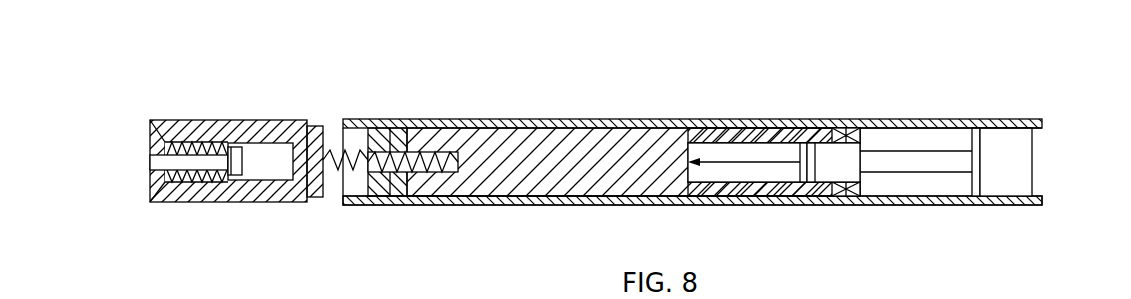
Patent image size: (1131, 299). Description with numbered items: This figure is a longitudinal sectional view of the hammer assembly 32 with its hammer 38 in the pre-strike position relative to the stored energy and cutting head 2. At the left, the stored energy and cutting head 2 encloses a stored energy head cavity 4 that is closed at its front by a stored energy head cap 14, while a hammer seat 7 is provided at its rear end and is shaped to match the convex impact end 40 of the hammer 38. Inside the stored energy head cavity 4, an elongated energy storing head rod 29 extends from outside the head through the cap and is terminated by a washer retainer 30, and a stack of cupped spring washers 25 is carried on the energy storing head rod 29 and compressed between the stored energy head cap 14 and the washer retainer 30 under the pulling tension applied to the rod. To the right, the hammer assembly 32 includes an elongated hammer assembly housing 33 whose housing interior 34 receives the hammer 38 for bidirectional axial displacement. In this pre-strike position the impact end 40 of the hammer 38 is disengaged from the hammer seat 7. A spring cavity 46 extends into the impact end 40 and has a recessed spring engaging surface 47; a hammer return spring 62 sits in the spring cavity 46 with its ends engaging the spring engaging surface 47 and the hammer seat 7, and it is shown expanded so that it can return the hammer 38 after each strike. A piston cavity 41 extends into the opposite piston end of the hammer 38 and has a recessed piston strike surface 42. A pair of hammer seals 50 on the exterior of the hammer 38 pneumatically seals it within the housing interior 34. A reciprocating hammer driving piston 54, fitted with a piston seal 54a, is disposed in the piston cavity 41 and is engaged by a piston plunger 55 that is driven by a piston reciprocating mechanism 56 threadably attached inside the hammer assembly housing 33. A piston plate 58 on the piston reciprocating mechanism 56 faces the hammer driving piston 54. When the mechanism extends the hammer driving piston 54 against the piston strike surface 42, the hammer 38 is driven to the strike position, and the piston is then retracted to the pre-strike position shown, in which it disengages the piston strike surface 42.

The stored energy and cutting head 2 is at (193, 116).
The stored energy head cavity 4 is at (262, 174).
The hammer seat 7 is at (326, 132).
The stored energy head cap 14 is at (151, 126).
The cupped spring washers 25 is at (208, 188).
The energy storing head rod 29 is at (160, 163).
The washer retainer 30 is at (234, 146).
The hammer assembly 32 is at (408, 58).
The hammer assembly housing 33 is at (552, 110).
The housing interior 34 is at (908, 136).
The hammer 38 is at (527, 214).
The impact end 40 is at (350, 200).
The piston cavity 41 is at (722, 148).
The piston strike surface 42 is at (696, 166).
The spring cavity 46 is at (418, 151).
The spring engaging surface 47 is at (447, 152).
The hammer seals 50 is at (392, 202).
The hammer driving piston 54 is at (823, 150).
The piston seal 54a is at (808, 148).
The piston plunger 55 is at (913, 167).
The piston reciprocating mechanism 56 is at (1020, 158).
The piston plate 58 is at (969, 193).
The hammer return spring 62 is at (445, 180).